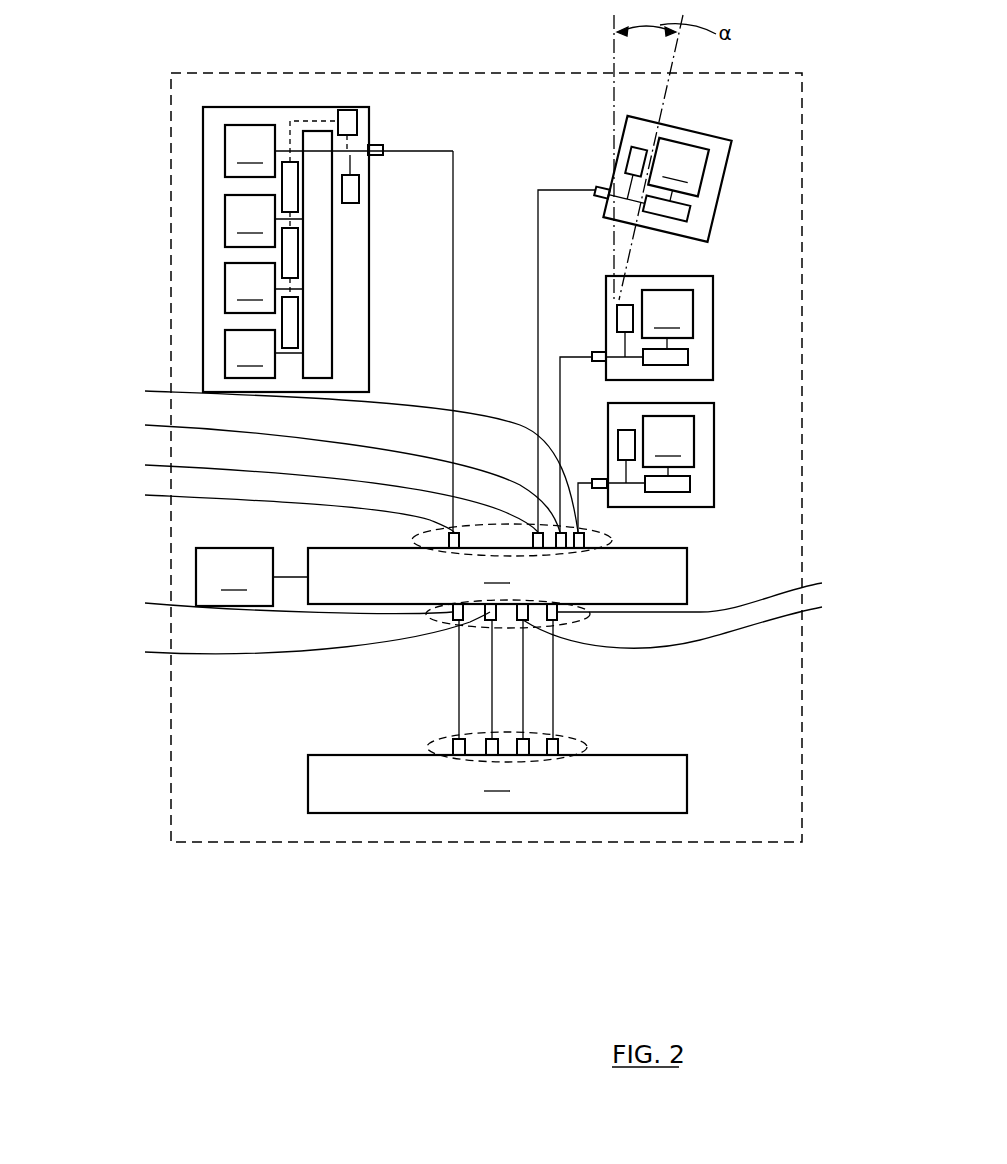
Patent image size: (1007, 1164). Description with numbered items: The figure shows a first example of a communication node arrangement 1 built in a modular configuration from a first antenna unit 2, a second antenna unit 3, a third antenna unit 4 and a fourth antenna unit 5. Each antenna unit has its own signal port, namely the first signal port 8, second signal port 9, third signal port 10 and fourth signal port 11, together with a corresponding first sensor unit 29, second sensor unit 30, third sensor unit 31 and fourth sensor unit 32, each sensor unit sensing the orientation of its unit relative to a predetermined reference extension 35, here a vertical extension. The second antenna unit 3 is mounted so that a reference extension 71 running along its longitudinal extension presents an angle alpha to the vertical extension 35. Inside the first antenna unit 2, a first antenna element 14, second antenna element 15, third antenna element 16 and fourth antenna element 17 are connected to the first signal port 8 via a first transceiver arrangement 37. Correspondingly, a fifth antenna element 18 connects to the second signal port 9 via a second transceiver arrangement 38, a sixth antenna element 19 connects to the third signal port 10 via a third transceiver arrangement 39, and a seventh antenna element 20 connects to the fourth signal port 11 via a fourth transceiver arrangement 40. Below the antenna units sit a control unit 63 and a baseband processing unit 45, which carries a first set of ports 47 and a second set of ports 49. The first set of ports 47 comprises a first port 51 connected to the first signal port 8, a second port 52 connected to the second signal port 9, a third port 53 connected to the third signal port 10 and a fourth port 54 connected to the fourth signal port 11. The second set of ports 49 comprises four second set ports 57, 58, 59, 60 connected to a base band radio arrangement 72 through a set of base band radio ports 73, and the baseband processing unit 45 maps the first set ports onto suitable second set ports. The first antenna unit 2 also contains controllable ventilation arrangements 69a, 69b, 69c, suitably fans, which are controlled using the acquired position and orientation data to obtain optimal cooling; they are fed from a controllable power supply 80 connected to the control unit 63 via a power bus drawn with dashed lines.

The communication node arrangement 1 is at (170, 76).
The first antenna unit 2 is at (203, 156).
The second antenna unit 3 is at (727, 176).
The third antenna unit 4 is at (728, 328).
The fourth antenna unit 5 is at (729, 461).
The first signal port 8 is at (376, 150).
The second signal port 9 is at (601, 198).
The third signal port 10 is at (597, 361).
The fourth signal port 11 is at (600, 488).
The first antenna element 14 is at (250, 151).
The second antenna element 15 is at (250, 221).
The third antenna element 16 is at (250, 288).
The fourth antenna element 17 is at (250, 354).
The fifth antenna element 18 is at (678, 167).
The sixth antenna element 19 is at (667, 314).
The seventh antenna element 20 is at (668, 441).
The first sensor unit 29 is at (350, 188).
The second sensor unit 30 is at (639, 162).
The third sensor unit 31 is at (627, 305).
The fourth sensor unit 32 is at (626, 430).
The predetermined reference extension 35 is at (612, 61).
The first transceiver arrangement 37 is at (322, 233).
The second transceiver arrangement 38 is at (668, 213).
The third transceiver arrangement 39 is at (672, 362).
The fourth transceiver arrangement 40 is at (668, 486).
The baseband processing unit 45 is at (497, 576).
The first set of ports 47 is at (425, 535).
The second set of ports 49 is at (480, 630).
The first port 51 is at (284, 508).
The second port 52 is at (326, 493).
The third port 53 is at (337, 473).
The fourth port 54 is at (346, 456).
The second set port 57 is at (283, 604).
The second set port 58 is at (302, 638).
The second set port 59 is at (687, 622).
The second set port 60 is at (704, 587).
The control unit 63 is at (234, 577).
The ventilation arrangement 69a is at (288, 185).
The ventilation arrangement 69b is at (288, 254).
The ventilation arrangement 69c is at (288, 320).
The reference extension 71 is at (665, 98).
The base band radio arrangement 72 is at (497, 784).
The base band radio ports 73 is at (590, 745).
The power supply 80 is at (347, 120).